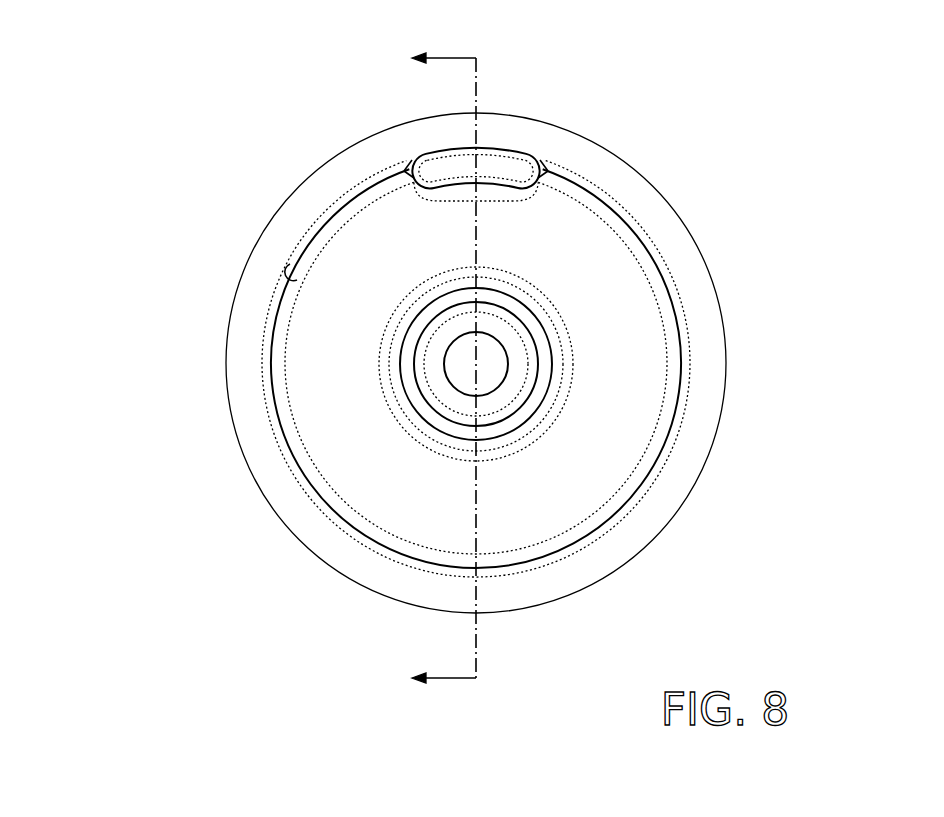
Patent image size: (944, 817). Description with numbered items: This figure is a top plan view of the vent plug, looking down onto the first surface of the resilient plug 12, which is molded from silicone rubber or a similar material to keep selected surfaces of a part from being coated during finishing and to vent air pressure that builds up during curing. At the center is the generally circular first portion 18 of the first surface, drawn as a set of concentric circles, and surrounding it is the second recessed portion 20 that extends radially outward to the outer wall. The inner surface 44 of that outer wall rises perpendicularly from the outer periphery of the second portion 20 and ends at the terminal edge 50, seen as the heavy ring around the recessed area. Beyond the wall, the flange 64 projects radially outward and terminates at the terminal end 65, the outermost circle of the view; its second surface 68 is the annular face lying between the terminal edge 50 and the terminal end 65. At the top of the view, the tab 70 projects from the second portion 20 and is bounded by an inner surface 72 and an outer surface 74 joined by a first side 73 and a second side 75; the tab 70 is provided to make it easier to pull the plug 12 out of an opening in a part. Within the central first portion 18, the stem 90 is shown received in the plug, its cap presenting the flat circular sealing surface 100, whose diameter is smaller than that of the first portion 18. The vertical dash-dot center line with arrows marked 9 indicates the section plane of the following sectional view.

The sealing surface 100 is at (180, 243).
The plug 12 is at (236, 456).
The first portion 18 is at (422, 322).
The second recessed portion 20 is at (569, 282).
The inner surface 44 is at (298, 273).
The terminal edge 50 is at (688, 313).
The flange 64 is at (310, 530).
The terminal end 65 is at (647, 178).
The second surface 68 is at (607, 168).
The tab 70 is at (504, 146).
The inner surface 72 is at (452, 190).
The first side 73 is at (410, 167).
The outer surface 74 is at (440, 147).
The second side 75 is at (540, 176).
The stem 90 is at (520, 417).
The section line 9- 9 is at (432, 369).